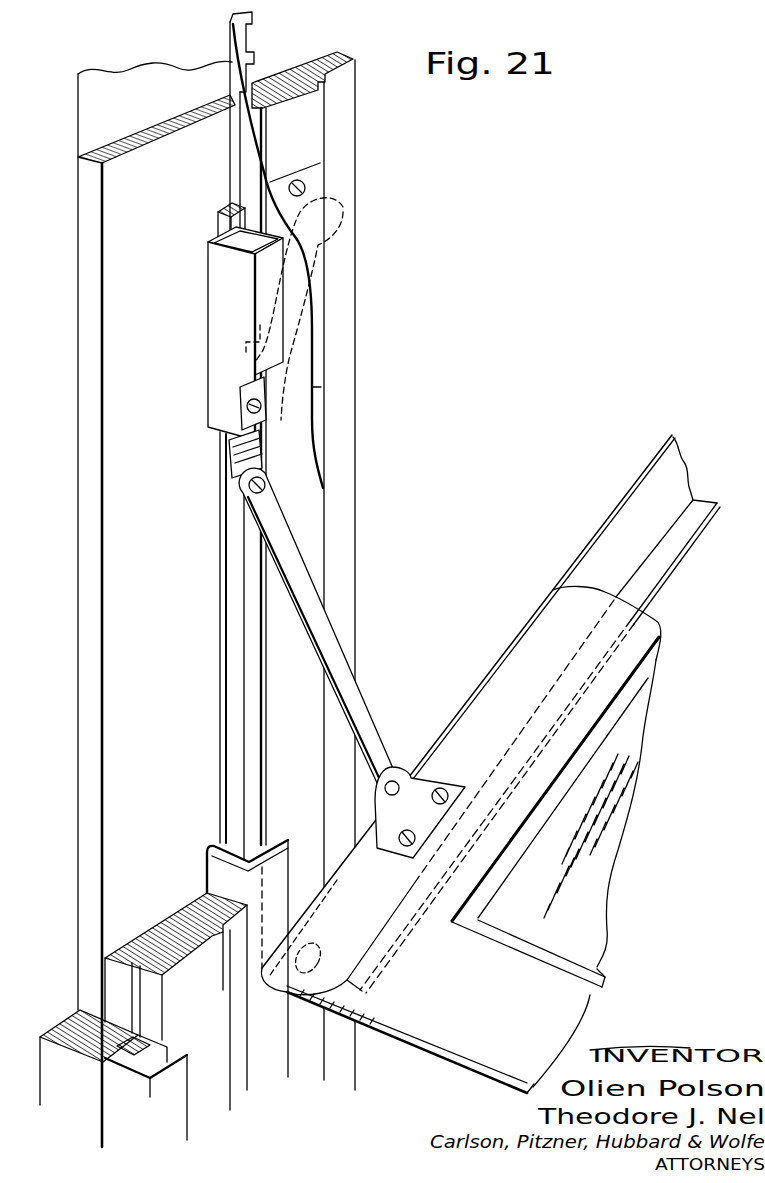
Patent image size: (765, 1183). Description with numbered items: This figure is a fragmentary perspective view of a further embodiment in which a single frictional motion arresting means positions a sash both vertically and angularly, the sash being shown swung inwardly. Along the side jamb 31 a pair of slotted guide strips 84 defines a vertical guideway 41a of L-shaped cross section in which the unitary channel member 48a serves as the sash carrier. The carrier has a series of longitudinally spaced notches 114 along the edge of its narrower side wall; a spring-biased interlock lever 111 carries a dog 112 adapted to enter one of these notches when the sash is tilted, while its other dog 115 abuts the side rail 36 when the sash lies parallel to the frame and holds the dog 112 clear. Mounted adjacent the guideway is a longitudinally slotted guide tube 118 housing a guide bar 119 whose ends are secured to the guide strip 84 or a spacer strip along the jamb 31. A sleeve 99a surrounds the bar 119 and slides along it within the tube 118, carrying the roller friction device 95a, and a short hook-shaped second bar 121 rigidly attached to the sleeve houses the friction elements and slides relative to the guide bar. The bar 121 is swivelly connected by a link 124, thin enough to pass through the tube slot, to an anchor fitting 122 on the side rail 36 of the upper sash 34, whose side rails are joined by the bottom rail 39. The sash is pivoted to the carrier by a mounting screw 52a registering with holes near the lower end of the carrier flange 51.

The side jamb 31 is at (80, 368).
The guide strip 84 is at (158, 932).
The channel member 48a is at (248, 162).
The notch 114 is at (244, 42).
The dog 115 is at (343, 208).
The interlock pawl or lever 111 is at (318, 247).
The guide bar 119 is at (222, 212).
The sleeve 99a is at (214, 304).
The dog 112 is at (256, 340).
The roller friction device 95a is at (218, 368).
The second bar 121 is at (256, 462).
The link 124 is at (365, 716).
The anchor fitting 122 is at (408, 776).
The flange 51 is at (322, 494).
The side rail 36 is at (533, 641).
The upper sash 34 is at (650, 683).
The mounting screw 52a is at (318, 947).
The bottom rail 39 is at (478, 1088).
The guide tube 118 is at (213, 871).
The guideway 41a is at (132, 996).